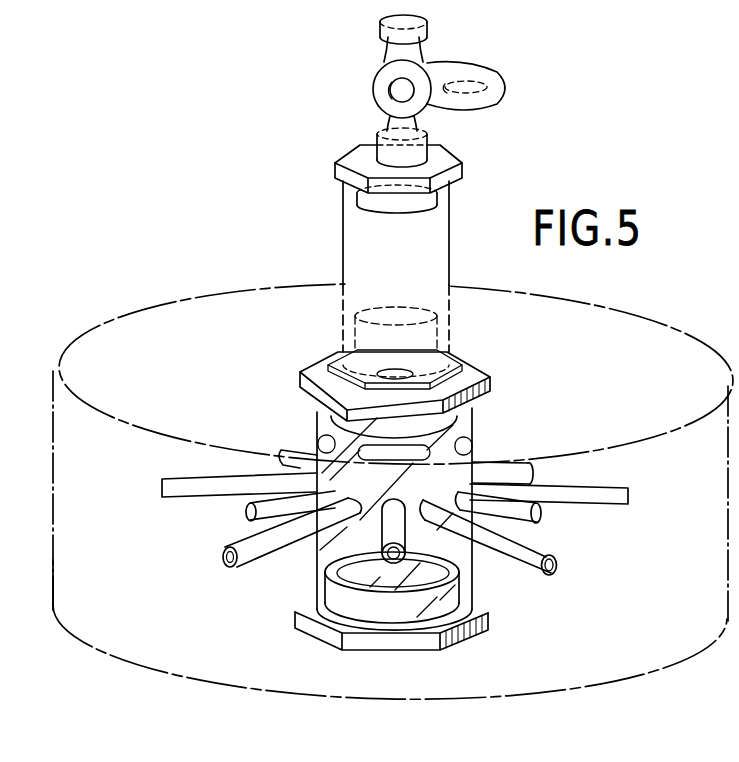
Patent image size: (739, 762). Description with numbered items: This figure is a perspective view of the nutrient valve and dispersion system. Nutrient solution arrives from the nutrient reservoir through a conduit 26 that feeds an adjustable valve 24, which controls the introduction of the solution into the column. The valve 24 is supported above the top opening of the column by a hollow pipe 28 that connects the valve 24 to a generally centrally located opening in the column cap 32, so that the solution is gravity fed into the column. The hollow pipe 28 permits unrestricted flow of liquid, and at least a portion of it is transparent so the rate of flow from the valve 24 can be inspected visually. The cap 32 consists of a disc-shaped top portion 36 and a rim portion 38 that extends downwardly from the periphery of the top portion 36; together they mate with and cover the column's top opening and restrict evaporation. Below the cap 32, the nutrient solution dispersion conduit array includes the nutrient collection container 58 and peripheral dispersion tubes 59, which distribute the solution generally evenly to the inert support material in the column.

The adjustable valve 24 is at (395, 92).
The conduit 26 is at (408, 50).
The hollow pipe 28 is at (448, 270).
The column cap 32 is at (79, 471).
The disc-shaped top portion 36 is at (153, 340).
The rim portion 38 is at (50, 568).
The nutrient collection container 58 is at (474, 456).
The radial tubes 59 is at (552, 553).